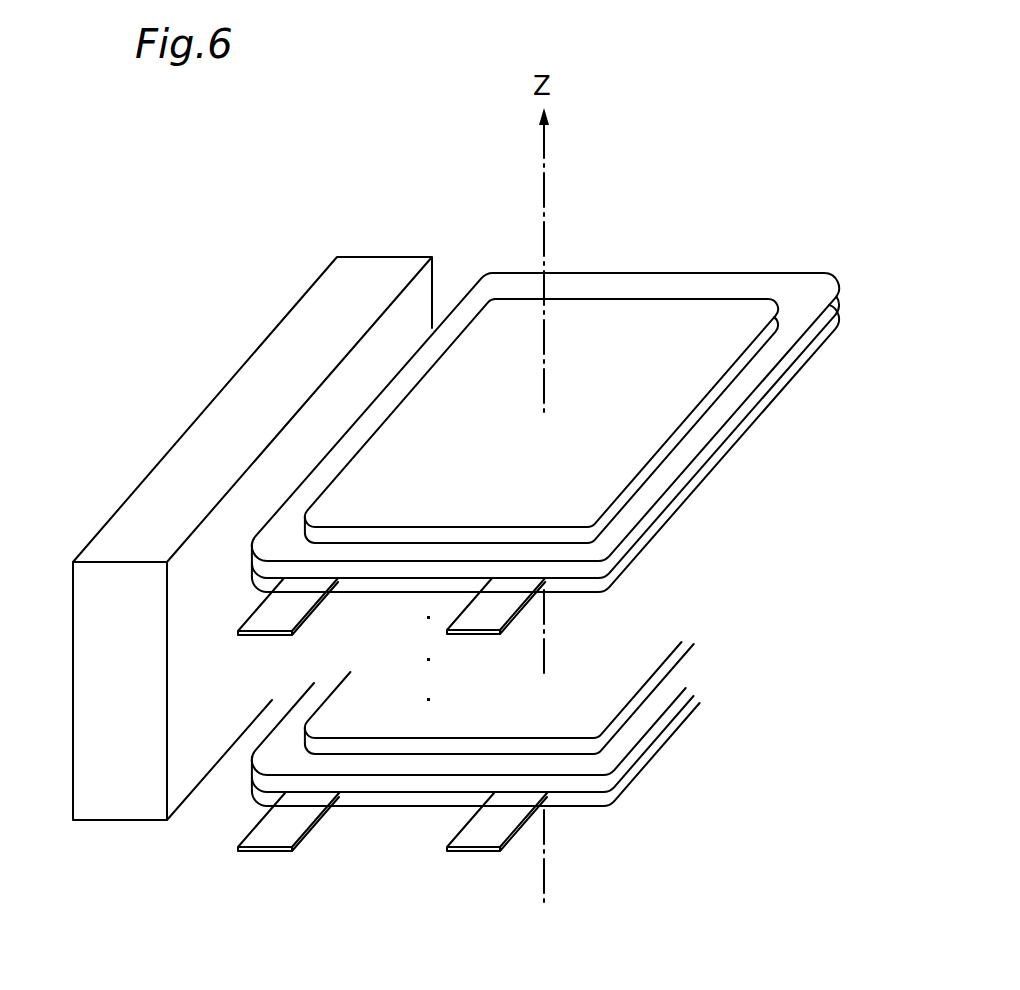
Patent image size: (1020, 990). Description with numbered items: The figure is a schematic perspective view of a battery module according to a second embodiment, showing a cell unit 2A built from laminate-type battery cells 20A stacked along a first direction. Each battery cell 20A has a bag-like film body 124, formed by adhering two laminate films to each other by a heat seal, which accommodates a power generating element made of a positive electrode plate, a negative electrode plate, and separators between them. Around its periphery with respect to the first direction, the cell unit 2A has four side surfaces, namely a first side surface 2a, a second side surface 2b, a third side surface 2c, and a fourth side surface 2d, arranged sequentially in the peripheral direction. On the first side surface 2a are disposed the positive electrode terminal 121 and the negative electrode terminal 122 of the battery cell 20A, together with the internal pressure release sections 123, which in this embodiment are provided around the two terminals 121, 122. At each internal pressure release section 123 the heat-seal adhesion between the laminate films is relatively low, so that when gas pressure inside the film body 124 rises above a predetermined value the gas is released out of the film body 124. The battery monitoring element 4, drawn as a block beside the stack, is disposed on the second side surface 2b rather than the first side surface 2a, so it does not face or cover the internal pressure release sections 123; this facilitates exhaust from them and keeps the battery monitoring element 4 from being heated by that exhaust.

The battery monitoring element 4 is at (238, 368).
The cell unit 2A is at (585, 237).
The first side surface 2a is at (397, 589).
The second side surface 2b is at (380, 392).
The third side surface 2c is at (626, 270).
The fourth side surface 2d is at (723, 467).
The battery cell 20A is at (688, 270).
The film body 124 is at (716, 340).
The positive electrode terminal 121 is at (270, 614).
The negative electrode terminal 122 is at (480, 618).
The internal pressure release section 123 is at (295, 584).